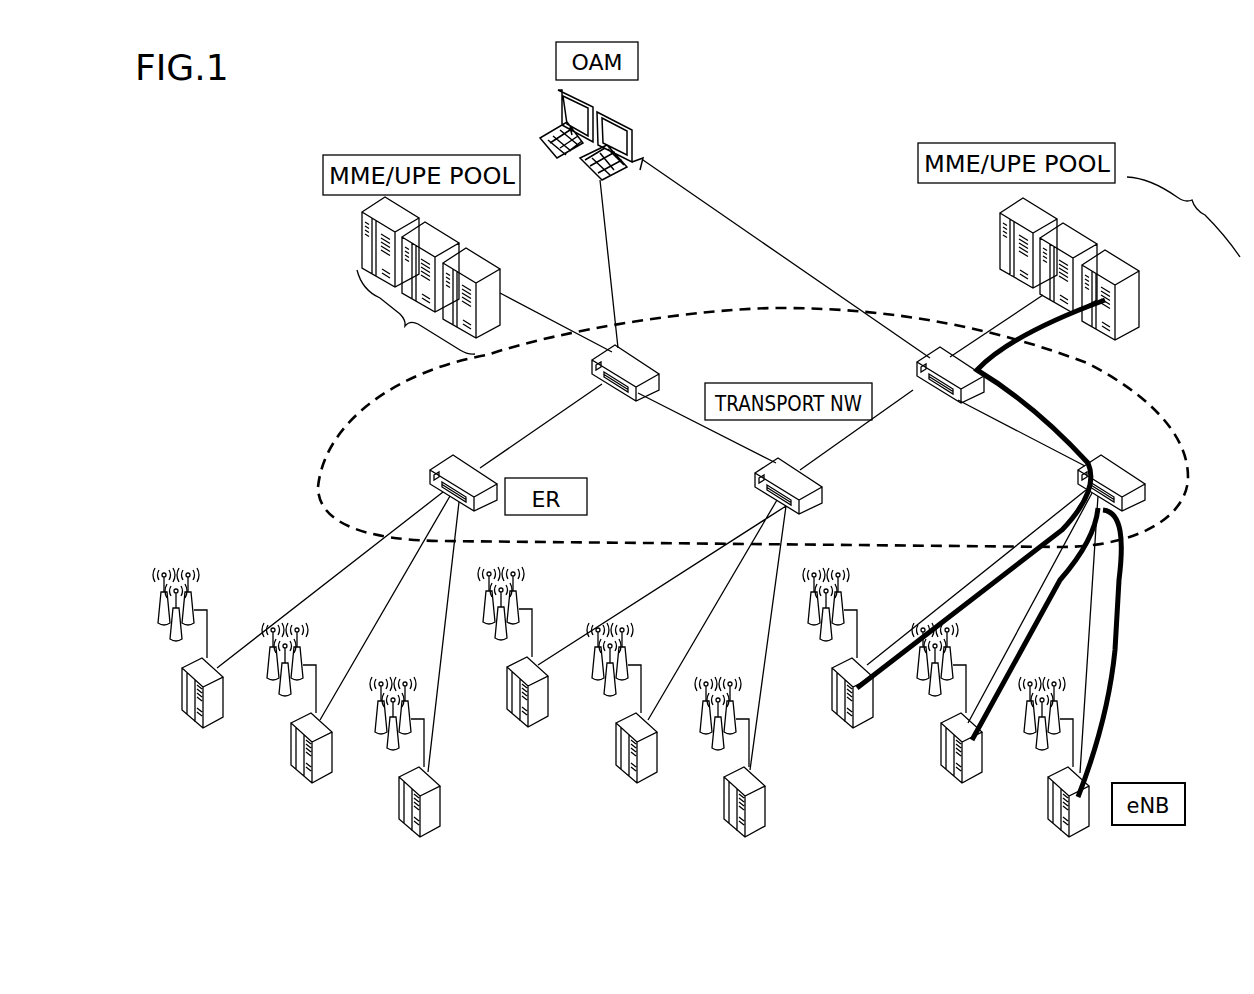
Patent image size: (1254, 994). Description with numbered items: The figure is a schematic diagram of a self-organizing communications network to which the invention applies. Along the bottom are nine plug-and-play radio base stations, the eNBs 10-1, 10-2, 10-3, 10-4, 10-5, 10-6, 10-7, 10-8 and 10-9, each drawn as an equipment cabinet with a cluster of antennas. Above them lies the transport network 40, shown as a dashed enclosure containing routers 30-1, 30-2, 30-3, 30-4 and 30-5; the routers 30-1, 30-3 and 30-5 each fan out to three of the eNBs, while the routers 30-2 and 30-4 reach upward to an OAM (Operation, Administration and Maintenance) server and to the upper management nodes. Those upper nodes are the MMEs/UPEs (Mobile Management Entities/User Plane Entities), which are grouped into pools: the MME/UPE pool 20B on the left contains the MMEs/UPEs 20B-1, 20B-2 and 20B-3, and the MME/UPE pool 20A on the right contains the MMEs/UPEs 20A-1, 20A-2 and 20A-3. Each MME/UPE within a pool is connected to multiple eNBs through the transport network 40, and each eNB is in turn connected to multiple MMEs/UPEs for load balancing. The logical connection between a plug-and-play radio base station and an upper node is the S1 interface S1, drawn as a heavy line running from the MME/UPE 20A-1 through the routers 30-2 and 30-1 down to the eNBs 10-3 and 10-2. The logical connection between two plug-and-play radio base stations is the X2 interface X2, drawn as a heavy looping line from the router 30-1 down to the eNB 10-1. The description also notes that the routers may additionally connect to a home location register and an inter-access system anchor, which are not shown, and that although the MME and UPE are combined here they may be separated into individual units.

The radio base station (eNB) 10-1 is at (1051, 785).
The radio base station (eNB) 10-2 is at (944, 731).
The radio base station (eNB) 10-3 is at (835, 676).
The radio base station (eNB) 10-4 is at (727, 785).
The radio base station (eNB) 10-5 is at (619, 731).
The radio base station (eNB) 10-6 is at (510, 675).
The radio base station (eNB) 10-7 is at (402, 785).
The radio base station (eNB) 10-8 is at (294, 731).
The radio base station (eNB) 10-9 is at (185, 676).
The MME/UPE pool 20A is at (1183, 217).
The MME/UPE 20A-1 is at (1152, 291).
The MME/UPE 20A-2 is at (1110, 264).
The MME/UPE 20A-3 is at (1071, 237).
The MME/UPE pool 20B is at (416, 312).
The MME/UPE 20B-1 is at (522, 293).
The MME/UPE 20B-2 is at (481, 267).
The MME/UPE 20B-3 is at (441, 242).
The router 30-1 is at (1063, 483).
The router 30-2 is at (902, 375).
The router 30-3 is at (740, 486).
The router 30-4 is at (577, 373).
The router 30-5 is at (415, 483).
The transport network 40 is at (1159, 410).
The S1 interface S1 is at (1032, 411).
The X2 interface X2 is at (1116, 647).